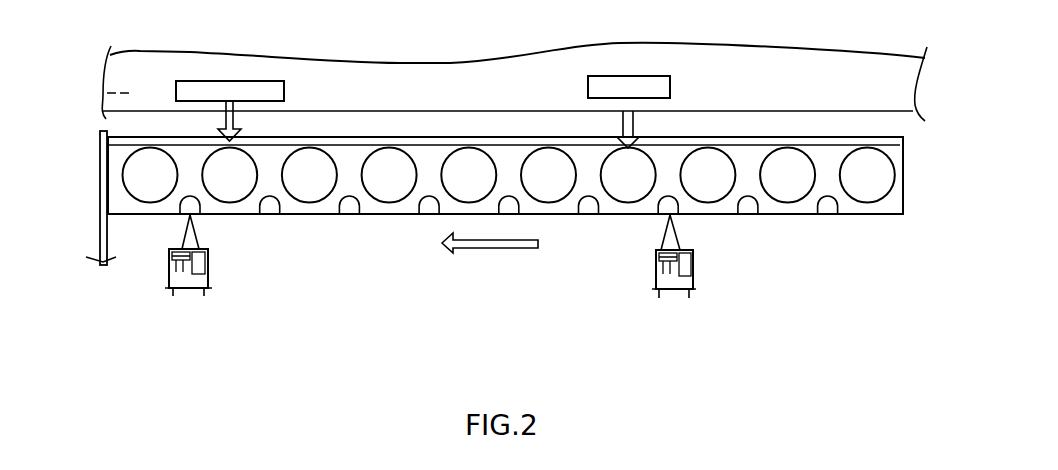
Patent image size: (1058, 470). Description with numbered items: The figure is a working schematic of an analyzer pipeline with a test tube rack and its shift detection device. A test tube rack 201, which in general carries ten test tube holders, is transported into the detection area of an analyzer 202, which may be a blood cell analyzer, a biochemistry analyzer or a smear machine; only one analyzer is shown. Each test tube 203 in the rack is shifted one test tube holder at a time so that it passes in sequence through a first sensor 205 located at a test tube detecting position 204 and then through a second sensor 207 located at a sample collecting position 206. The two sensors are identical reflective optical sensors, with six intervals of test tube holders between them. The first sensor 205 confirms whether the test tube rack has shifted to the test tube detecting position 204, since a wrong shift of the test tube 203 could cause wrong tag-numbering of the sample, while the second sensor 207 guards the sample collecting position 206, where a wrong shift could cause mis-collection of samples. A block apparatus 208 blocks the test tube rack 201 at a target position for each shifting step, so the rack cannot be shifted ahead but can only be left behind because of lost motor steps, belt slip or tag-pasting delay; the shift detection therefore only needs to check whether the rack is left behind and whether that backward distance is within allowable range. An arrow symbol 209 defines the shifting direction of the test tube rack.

The test tube rack 201 is at (888, 208).
The analyzer 202 is at (100, 91).
The test tube 203 is at (865, 173).
The test tube detecting position 204 is at (598, 90).
The first sensor 205 is at (693, 283).
The sample collecting position 206 is at (273, 93).
The second sensor 207 is at (204, 282).
The block apparatus 208 is at (102, 240).
The arrow symbol 209 is at (497, 243).